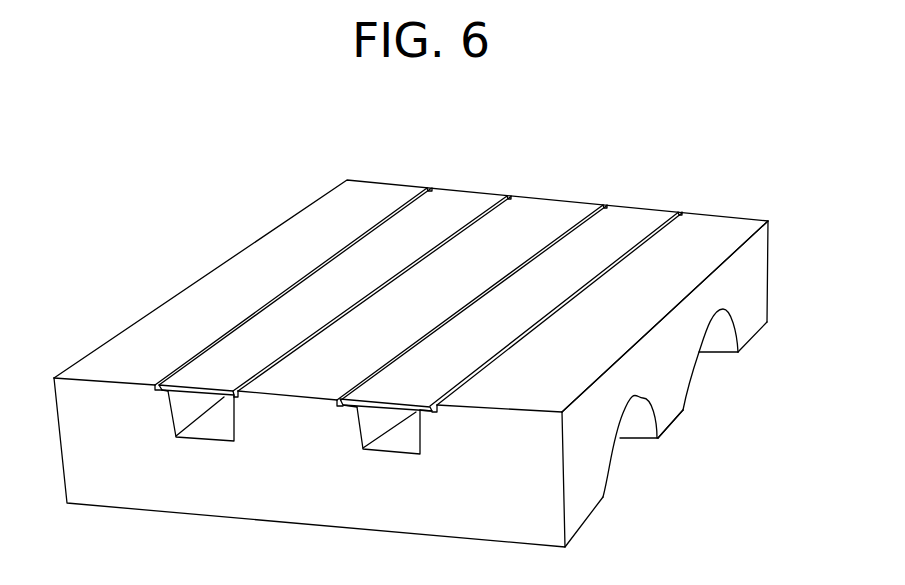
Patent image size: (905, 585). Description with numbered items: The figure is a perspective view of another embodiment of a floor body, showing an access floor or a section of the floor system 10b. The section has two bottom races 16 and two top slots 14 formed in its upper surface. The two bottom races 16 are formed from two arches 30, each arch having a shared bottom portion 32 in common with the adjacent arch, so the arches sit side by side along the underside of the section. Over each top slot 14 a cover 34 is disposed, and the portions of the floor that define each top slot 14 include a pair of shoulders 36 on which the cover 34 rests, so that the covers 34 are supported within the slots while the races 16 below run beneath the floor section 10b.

The floor system 10b is at (173, 145).
The cover 34 is at (457, 205).
The shoulders 36 is at (158, 400).
The top slot 14 is at (192, 447).
The arch 30 is at (605, 460).
The shared bottom portion 32 is at (667, 407).
The bottom race 16 is at (715, 385).